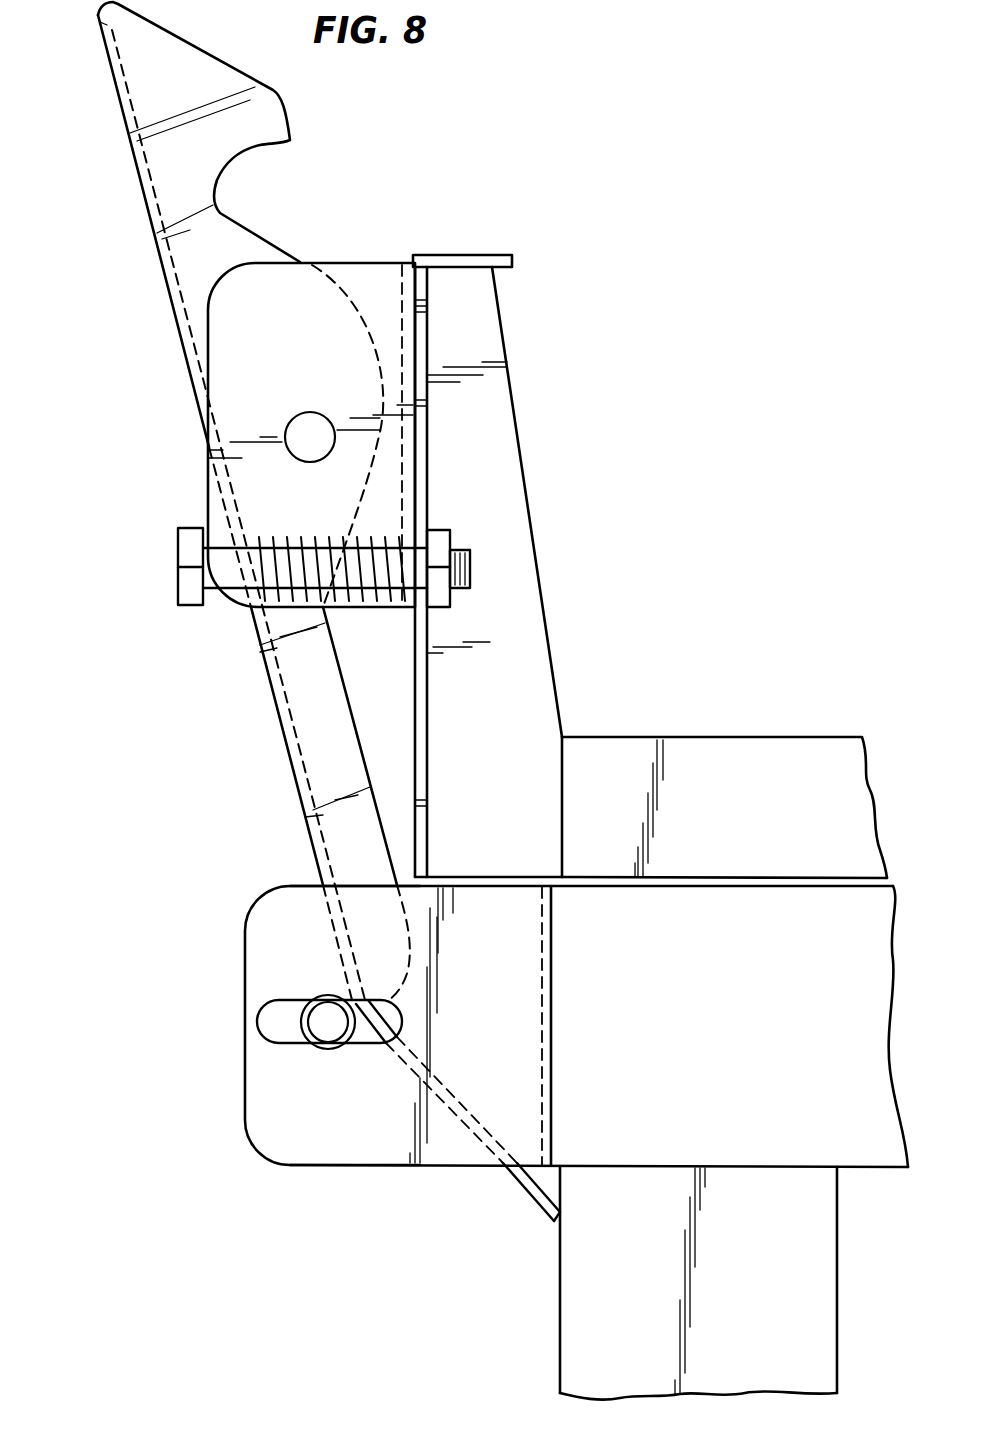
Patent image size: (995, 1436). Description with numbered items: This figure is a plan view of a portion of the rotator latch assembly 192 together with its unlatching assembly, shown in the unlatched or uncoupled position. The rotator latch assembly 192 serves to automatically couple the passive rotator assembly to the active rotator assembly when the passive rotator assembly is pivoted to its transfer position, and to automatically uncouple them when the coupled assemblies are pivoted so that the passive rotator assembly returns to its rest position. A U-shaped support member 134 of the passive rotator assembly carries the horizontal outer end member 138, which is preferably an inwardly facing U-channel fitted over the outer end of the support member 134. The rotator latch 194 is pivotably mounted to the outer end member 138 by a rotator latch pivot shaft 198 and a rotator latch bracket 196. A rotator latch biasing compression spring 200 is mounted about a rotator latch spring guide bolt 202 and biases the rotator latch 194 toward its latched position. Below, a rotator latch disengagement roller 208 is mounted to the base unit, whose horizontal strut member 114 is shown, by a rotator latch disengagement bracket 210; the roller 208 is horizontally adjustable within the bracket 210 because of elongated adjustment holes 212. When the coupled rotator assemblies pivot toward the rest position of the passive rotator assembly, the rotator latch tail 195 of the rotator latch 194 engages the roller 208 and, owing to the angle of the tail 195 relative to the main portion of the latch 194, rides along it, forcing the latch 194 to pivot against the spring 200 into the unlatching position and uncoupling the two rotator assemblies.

The horizontal strut member 114 is at (759, 1034).
The U-shaped support member 134 is at (782, 830).
The horizontal outer end member 138 is at (413, 627).
The rotator latch assembly 192 is at (284, 419).
The rotator latch 194 is at (190, 323).
The rotator latch tail 195 is at (527, 1182).
The rotator latch bracket 196 is at (390, 277).
The rotator latch pivot shaft 198 is at (311, 416).
The rotator latch biasing compression spring 200 is at (343, 545).
The rotator latch spring guide bolt 202 is at (188, 560).
The rotator latch disengagement roller 208 is at (327, 1013).
The rotator latch disengagement bracket 210 is at (315, 1130).
The elongated adjustment holes 212 is at (267, 1020).